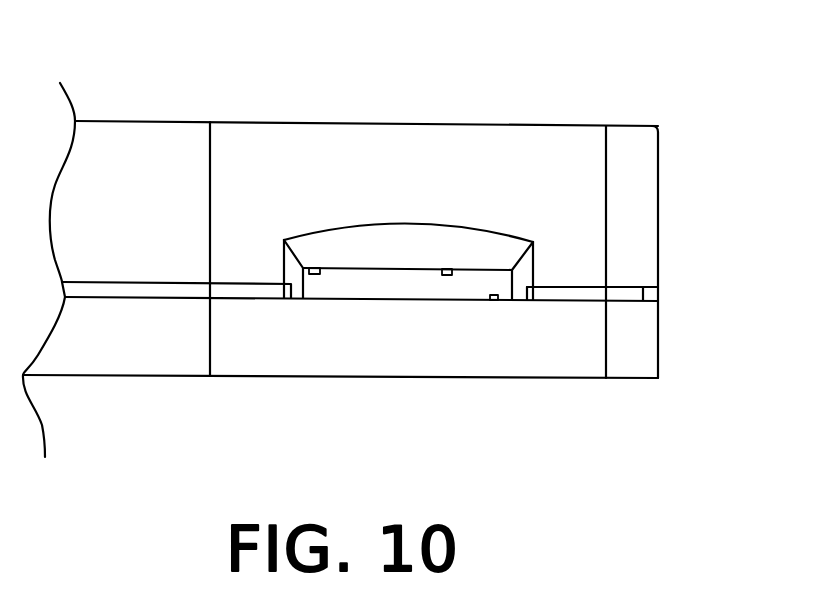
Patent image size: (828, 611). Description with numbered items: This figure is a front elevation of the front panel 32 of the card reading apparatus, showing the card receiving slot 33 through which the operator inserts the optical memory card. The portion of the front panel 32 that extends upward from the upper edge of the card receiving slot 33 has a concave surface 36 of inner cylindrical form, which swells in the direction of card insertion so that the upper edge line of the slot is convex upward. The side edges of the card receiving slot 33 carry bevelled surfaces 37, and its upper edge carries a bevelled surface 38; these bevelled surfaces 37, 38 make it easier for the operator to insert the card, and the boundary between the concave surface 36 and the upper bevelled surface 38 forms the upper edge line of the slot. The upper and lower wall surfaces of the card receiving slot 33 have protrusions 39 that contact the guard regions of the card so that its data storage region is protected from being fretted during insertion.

The front panel 32 is at (148, 142).
The card receiving slot 33 is at (383, 285).
The concave surface 36 is at (442, 143).
The bevelled surfaces 37 is at (291, 261).
The bevelled surface 38 is at (350, 237).
The protrusions 39 is at (315, 268).